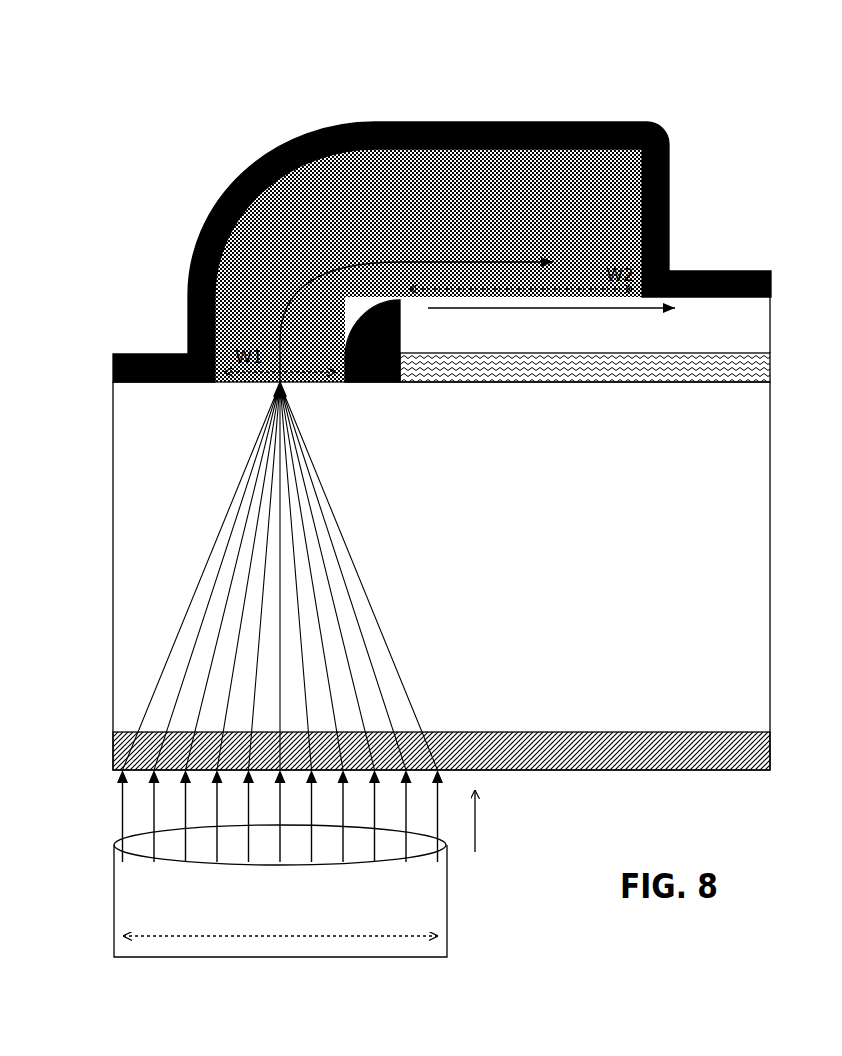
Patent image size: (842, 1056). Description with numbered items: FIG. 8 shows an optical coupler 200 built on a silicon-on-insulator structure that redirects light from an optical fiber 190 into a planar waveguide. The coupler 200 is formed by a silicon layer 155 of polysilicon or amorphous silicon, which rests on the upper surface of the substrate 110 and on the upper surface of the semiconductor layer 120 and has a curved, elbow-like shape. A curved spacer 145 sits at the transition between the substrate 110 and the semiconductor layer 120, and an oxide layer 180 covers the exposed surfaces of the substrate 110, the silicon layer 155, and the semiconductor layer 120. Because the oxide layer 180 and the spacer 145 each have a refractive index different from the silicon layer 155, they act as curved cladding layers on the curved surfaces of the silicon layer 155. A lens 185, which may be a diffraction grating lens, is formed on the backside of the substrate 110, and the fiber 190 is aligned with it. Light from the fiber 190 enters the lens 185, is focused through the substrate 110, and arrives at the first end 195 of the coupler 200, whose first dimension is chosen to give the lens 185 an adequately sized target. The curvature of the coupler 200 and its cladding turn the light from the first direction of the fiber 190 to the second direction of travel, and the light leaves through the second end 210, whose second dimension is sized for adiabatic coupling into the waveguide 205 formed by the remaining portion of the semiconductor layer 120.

The coupler 200 is at (600, 92).
The oxide layer 180 is at (312, 135).
The silicon layer 155 is at (364, 221).
The curved spacer 145 is at (393, 390).
The first end 195 is at (329, 389).
The semiconductor layer 120 is at (712, 341).
The second end 210 is at (625, 318).
The waveguide 205 is at (603, 367).
The substrate 110 is at (712, 488).
The lens 185 is at (104, 741).
The optical fiber 190 is at (443, 898).